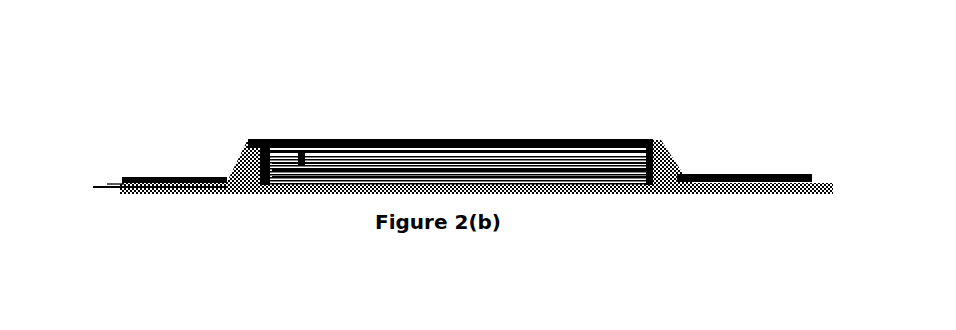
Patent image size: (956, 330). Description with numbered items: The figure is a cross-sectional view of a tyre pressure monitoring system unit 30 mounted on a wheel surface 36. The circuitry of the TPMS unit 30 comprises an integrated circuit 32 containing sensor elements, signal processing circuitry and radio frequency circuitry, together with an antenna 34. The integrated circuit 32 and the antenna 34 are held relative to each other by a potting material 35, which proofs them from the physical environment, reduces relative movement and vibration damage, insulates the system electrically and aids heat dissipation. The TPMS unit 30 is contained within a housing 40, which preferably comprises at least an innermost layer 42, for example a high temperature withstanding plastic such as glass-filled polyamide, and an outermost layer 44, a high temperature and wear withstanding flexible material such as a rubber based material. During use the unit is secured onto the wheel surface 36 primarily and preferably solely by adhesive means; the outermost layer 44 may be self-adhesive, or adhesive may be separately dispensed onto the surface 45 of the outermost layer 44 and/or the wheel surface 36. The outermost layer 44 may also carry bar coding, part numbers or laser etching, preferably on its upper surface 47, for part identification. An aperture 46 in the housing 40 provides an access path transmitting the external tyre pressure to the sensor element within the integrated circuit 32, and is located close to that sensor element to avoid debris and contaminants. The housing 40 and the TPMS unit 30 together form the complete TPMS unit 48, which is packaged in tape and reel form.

The tyre pressure monitoring system (TPMS) unit 30 is at (285, 178).
The integrated circuit 32 is at (302, 173).
The antenna 34 is at (550, 173).
The potting material 35 is at (645, 175).
The wheel surface 36 is at (145, 180).
The housing 40 is at (659, 137).
The innermost layer 42 is at (653, 160).
The outermost layer 44 is at (246, 157).
The surface of the outermost layer 45 is at (228, 188).
The aperture 46 is at (297, 140).
The upper surface 47 is at (390, 140).
The TPMS unit 48 is at (496, 124).